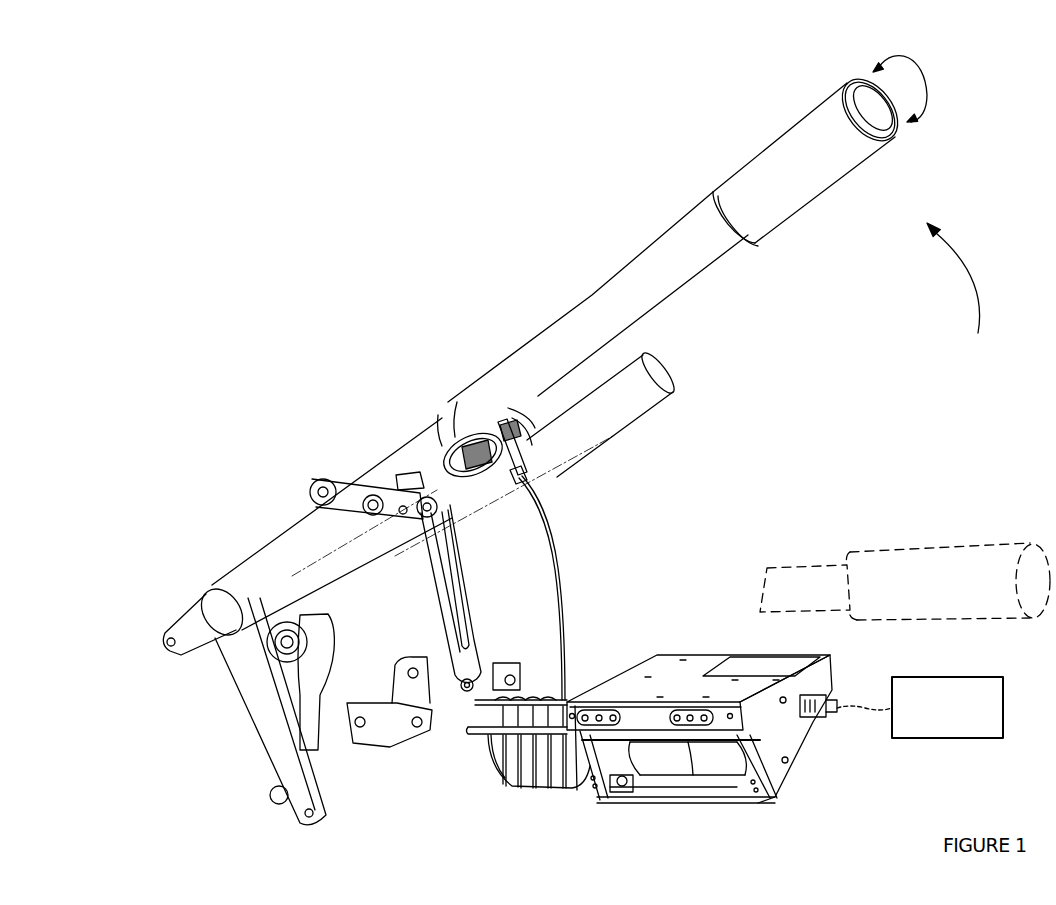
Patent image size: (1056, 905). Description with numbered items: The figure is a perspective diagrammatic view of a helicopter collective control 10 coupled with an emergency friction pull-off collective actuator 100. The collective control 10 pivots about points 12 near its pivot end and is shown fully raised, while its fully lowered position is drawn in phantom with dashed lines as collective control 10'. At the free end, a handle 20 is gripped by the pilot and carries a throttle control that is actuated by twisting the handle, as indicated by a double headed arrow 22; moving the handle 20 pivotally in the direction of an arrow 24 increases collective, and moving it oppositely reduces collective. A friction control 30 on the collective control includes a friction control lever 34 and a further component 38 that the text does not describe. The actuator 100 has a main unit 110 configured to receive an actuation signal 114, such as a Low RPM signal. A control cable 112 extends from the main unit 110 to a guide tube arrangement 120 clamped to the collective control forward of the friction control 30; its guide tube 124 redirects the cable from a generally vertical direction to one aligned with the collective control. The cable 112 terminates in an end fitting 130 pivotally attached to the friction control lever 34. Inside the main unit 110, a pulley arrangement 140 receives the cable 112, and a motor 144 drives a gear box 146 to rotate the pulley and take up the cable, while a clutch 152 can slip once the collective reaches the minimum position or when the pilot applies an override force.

The helicopter collective control 10 is at (571, 448).
The collective control in fully lowered position 10' is at (905, 562).
The pivot points 12 is at (357, 575).
The handle 20 is at (833, 187).
The double headed arrow 22 is at (921, 119).
The arrow 24 is at (970, 287).
The friction control 30 is at (341, 470).
The friction control lever 34 is at (360, 483).
The roller 38 is at (323, 473).
The emergency friction pull-off collective actuator 100 is at (577, 559).
The main unit 110 is at (670, 655).
The control cable 112 is at (547, 530).
The actuation signal 114 is at (953, 738).
The guide tube arrangement 120 is at (532, 412).
The guide tube 124 is at (507, 480).
The end fitting 130 is at (385, 488).
The pulley arrangement 140 is at (513, 787).
The motor 144 is at (702, 793).
The gear box 146 is at (624, 794).
The clutch 152 is at (561, 792).